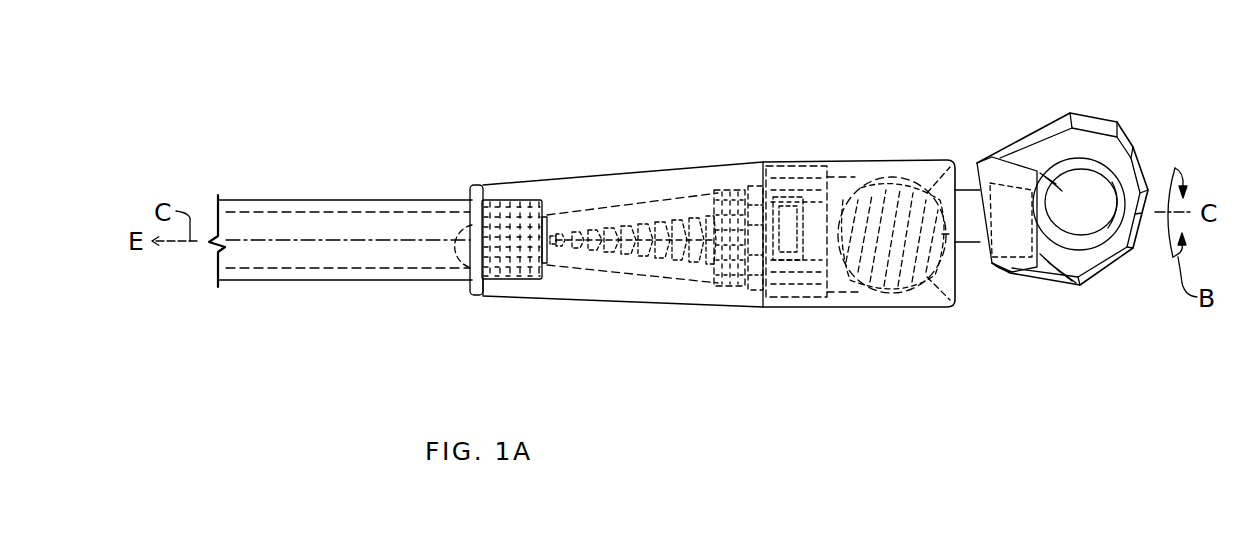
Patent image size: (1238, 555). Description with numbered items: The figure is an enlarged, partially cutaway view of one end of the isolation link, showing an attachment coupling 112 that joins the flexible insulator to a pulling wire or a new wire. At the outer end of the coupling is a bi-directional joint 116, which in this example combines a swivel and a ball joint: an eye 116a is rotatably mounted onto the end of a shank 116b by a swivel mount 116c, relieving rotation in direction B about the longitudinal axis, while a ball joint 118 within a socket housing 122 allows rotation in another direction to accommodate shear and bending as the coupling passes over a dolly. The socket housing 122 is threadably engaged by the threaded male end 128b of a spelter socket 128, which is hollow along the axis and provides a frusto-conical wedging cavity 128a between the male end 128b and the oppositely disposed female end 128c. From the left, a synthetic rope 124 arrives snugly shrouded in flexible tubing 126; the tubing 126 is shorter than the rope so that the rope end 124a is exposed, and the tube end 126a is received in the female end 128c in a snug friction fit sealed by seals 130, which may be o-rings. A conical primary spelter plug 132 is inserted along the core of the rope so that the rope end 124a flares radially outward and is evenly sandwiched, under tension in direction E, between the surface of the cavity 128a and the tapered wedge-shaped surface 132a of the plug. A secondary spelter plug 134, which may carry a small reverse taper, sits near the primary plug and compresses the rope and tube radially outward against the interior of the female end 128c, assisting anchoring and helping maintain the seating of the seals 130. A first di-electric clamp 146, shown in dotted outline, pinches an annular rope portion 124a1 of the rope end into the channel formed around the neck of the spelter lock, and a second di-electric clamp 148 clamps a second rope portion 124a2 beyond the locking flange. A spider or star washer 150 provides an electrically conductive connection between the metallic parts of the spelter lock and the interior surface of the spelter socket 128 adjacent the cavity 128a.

The attachment coupling 112 is at (575, 55).
The bi-directional joint 116 is at (1099, 184).
The eye 116a is at (1143, 158).
The shank 116b is at (972, 240).
The swivel mount 116c is at (1027, 207).
The ball joint 118 is at (890, 174).
The socket housing 122 is at (948, 309).
The rope 124 is at (280, 206).
The rope end 124a is at (610, 200).
The annular portion of rope end 124a1 is at (728, 263).
The second rope portion 124a2 is at (794, 263).
The flexible tubing 126 is at (370, 188).
The tube end 126a is at (535, 282).
The spelter socket 128 is at (591, 155).
The frusto-conical wedging cavity 128a is at (700, 195).
The threaded male end 128b is at (793, 183).
The female end 128c is at (472, 288).
The seals 130 is at (528, 198).
The primary spelter plug 132 is at (640, 284).
The tapered wedge-shaped surface 132a is at (578, 250).
The secondary spelter plug 134 is at (462, 248).
The first di-electric clamp 146 is at (733, 193).
The second di-electric clamp 148 is at (803, 203).
The spider or star washer 150 is at (778, 273).